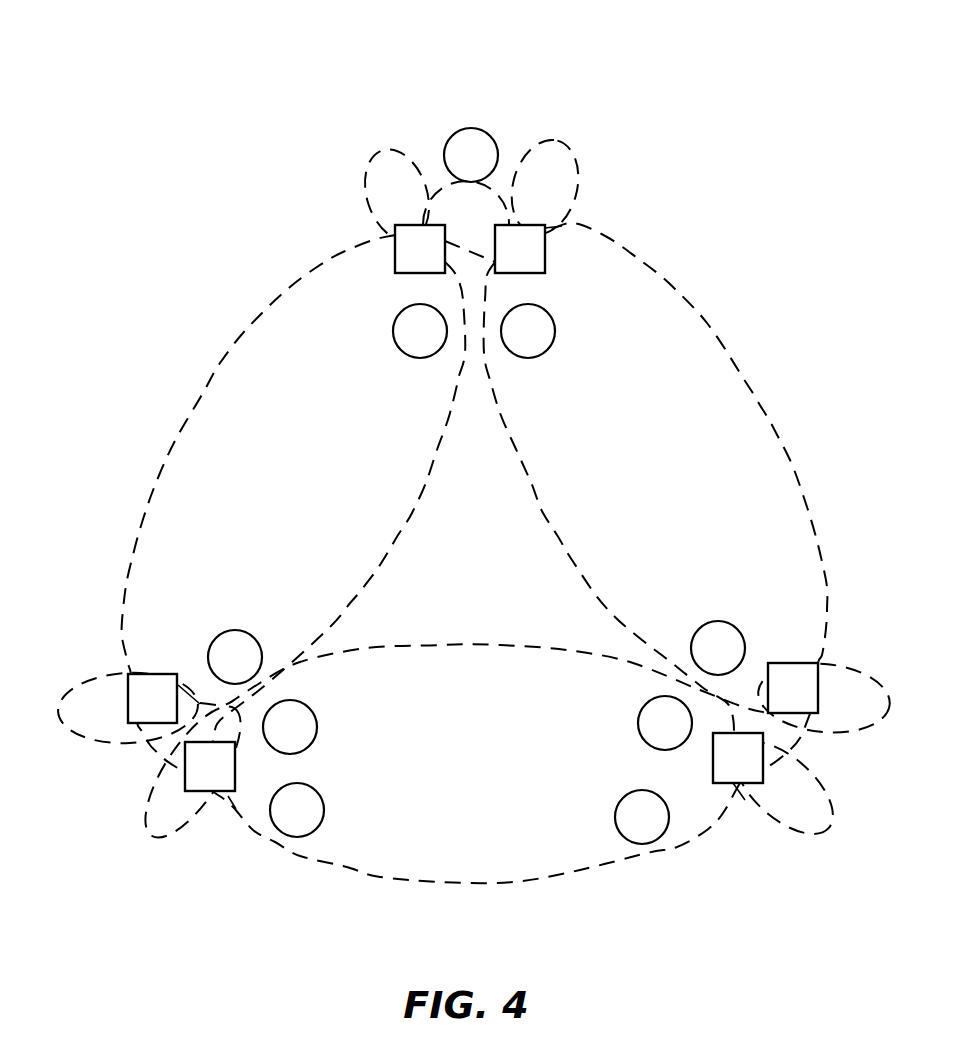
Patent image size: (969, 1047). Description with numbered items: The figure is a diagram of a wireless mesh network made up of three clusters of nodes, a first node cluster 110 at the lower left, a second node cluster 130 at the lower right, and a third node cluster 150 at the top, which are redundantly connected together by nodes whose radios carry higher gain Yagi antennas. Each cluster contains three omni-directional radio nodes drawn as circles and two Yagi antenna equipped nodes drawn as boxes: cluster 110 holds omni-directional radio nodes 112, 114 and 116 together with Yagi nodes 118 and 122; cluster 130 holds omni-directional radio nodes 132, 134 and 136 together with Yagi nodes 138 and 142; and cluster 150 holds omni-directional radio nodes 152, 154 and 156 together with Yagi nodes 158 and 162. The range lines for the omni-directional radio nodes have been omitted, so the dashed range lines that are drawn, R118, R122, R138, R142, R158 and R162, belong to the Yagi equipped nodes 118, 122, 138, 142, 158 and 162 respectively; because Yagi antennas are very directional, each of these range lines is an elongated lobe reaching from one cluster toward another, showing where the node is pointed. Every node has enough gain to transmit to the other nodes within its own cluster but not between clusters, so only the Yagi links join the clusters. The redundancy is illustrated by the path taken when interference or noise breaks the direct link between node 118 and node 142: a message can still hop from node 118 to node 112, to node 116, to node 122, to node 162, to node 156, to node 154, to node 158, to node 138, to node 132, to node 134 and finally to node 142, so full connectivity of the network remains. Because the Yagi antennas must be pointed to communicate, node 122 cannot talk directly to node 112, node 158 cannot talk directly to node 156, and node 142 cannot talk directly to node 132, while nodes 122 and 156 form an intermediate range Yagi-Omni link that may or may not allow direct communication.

The node cluster 110 is at (108, 812).
The omni-directional radio node 112 is at (280, 822).
The omni-directional radio node 114 is at (273, 739).
The omni-directional radio node 116 is at (218, 669).
The Yagi antenna equipped node 118 is at (193, 779).
The Yagi antenna equipped node 122 is at (135, 711).
The node cluster 130 is at (865, 812).
The omni-directional radio node 132 is at (701, 660).
The omni-directional radio node 134 is at (648, 735).
The omni-directional radio node 136 is at (625, 829).
The Yagi antenna equipped node 138 is at (776, 700).
The Yagi antenna equipped node 142 is at (721, 770).
The node cluster 150 is at (527, 110).
The omni-directional radio node 152 is at (454, 167).
The omni-directional radio node 154 is at (511, 343).
The omni-directional radio node 156 is at (403, 343).
The Yagi antenna equipped node 158 is at (503, 262).
The Yagi antenna equipped node 162 is at (403, 262).
The ring of router 122 R122 is at (195, 408).
The ring of router 118 R118 is at (438, 880).
The ring of router 138 R138 is at (757, 402).
The ring of router 142 R142 is at (445, 647).
The ring of router 158 R158 is at (538, 498).
The ring of router 162 R162 is at (416, 495).